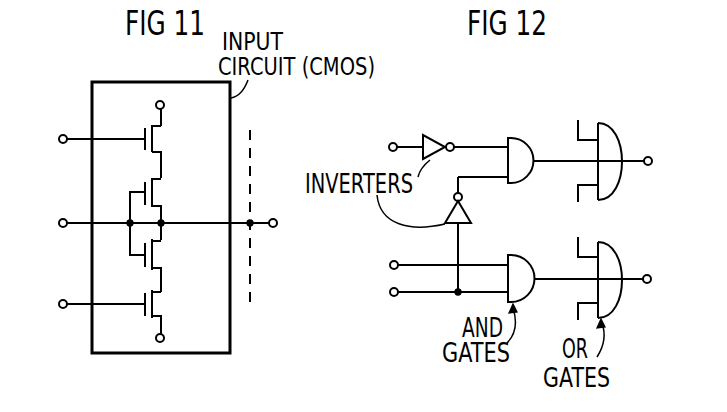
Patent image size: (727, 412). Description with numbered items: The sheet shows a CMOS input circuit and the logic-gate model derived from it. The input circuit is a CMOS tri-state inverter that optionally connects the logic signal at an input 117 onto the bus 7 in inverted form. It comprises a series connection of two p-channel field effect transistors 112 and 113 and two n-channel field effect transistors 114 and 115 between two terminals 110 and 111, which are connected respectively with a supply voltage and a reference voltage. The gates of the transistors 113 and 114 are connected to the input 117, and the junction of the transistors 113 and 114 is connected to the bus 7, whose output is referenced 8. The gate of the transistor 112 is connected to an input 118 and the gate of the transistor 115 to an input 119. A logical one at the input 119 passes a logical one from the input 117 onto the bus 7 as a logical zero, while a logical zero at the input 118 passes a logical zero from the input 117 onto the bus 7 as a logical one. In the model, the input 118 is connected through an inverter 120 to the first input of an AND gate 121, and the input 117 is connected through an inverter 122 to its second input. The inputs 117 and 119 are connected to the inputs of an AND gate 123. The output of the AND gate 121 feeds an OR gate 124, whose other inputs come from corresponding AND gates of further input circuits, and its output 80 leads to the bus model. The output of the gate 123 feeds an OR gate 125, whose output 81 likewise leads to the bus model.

In FIG. 11, the terminal 110 is at (144, 107).
In FIG. 11, the terminal 111 is at (144, 338).
In FIG. 11, the p-channel field effect transistor 112 is at (179, 151).
In FIG. 11, the p-channel field effect transistor 113 is at (171, 215).
In FIG. 11, the n-channel field effect transistor 114 is at (179, 265).
In FIG. 11, the n-channel field effect transistor 115 is at (179, 312).
In FIG. 11, the input 117 is at (97, 221).
In FIG. 12, the input 117 is at (434, 291).
In FIG. 11, the input 118 is at (87, 139).
In FIG. 12, the input 118 is at (390, 148).
In FIG. 11, the input 119 is at (87, 304).
In FIG. 12, the input 119 is at (434, 264).
In FIG. 11, the bus 7 is at (256, 218).
In FIG. 11, the output 8 is at (225, 223).
In FIG. 12, the inverter 120 is at (463, 132).
In FIG. 12, the AND gate 121 is at (550, 146).
In FIG. 12, the inverter 122 is at (462, 234).
In FIG. 12, the AND gate 123 is at (548, 263).
In FIG. 12, the OR gate 124 is at (605, 150).
In FIG. 12, the OR gate 125 is at (608, 290).
In FIG. 12, the output 80 is at (648, 163).
In FIG. 12, the output 81 is at (647, 281).